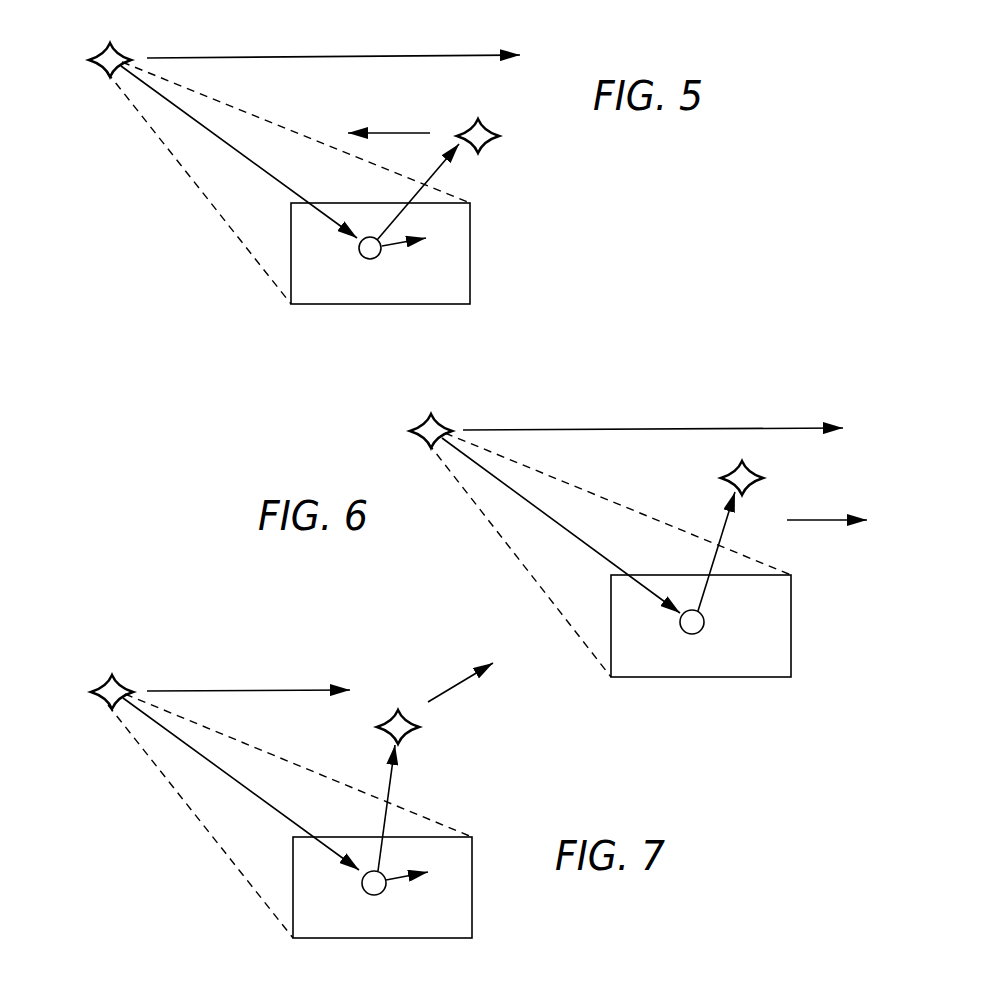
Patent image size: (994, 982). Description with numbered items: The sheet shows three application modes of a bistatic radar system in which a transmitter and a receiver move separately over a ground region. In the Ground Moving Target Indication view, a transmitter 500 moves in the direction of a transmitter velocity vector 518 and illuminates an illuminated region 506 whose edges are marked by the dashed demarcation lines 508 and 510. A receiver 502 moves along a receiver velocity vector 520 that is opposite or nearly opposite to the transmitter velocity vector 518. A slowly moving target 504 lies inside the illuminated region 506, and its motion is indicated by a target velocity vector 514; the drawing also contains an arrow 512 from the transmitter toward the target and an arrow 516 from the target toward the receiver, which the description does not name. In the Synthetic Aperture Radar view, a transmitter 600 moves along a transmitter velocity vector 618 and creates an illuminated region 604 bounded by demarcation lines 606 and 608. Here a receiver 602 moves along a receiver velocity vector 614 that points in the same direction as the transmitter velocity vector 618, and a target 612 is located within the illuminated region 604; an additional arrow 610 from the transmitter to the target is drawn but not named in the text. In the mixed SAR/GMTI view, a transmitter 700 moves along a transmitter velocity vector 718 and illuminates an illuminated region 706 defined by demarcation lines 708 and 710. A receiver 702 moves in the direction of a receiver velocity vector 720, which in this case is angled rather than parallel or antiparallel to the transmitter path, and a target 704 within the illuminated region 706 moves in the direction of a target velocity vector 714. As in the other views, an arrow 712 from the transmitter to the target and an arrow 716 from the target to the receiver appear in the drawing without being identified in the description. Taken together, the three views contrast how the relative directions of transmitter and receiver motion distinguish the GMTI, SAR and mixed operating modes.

In FIG. 5, the transmitter 500 is at (99, 48).
In FIG. 5, the receiver 502 is at (493, 128).
In FIG. 5, the slowly moving target 504 is at (370, 259).
In FIG. 5, the illuminated region 506 is at (470, 247).
In FIG. 5, the demarcation line 508 is at (300, 127).
In FIG. 5, the demarcation line 510 is at (193, 187).
In FIG. 5, the incident ray 512 is at (276, 179).
In FIG. 5, the target velocity vector 514 is at (395, 244).
In FIG. 5, the ray to second source 516 is at (438, 169).
In FIG. 5, the transmitter velocity vector 518 is at (339, 56).
In FIG. 5, the receiver velocity vector 520 is at (400, 133).
In FIG. 6, the transmitter 600 is at (422, 425).
In FIG. 6, the receiver 602 is at (758, 475).
In FIG. 6, the illuminated region 604 is at (791, 620).
In FIG. 6, the demarcation line 606 is at (620, 500).
In FIG. 6, the demarcation line 608 is at (513, 560).
In FIG. 6, the incident ray 610 is at (592, 551).
In FIG. 6, the target 612 is at (690, 634).
In FIG. 6, the receiver velocity vector 614 is at (820, 520).
In FIG. 6, the transmitter velocity vector 618 is at (677, 428).
In FIG. 7, the transmitter 700 is at (101, 682).
In FIG. 7, the receiver 702 is at (403, 738).
In FIG. 7, the target 704 is at (372, 895).
In FIG. 7, the illuminated region 706 is at (472, 881).
In FIG. 7, the demarcation line 708 is at (300, 763).
In FIG. 7, the demarcation line 710 is at (195, 821).
In FIG. 7, the incident ray 712 is at (278, 812).
In FIG. 7, the target velocity vector 714 is at (398, 878).
In FIG. 7, the ray to second source 716 is at (392, 782).
In FIG. 7, the transmitter velocity vector 718 is at (255, 690).
In FIG. 7, the receiver velocity vector 720 is at (448, 690).